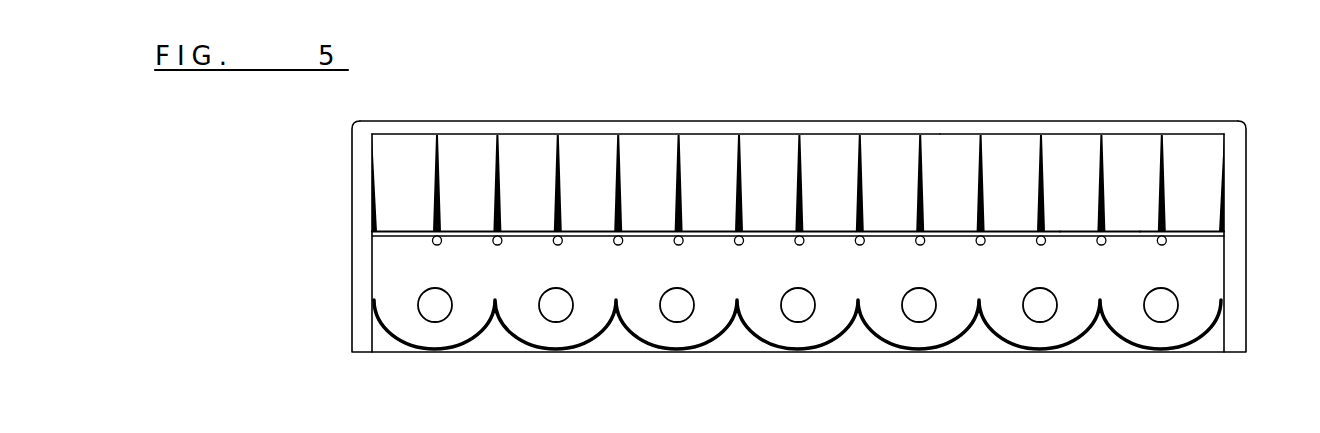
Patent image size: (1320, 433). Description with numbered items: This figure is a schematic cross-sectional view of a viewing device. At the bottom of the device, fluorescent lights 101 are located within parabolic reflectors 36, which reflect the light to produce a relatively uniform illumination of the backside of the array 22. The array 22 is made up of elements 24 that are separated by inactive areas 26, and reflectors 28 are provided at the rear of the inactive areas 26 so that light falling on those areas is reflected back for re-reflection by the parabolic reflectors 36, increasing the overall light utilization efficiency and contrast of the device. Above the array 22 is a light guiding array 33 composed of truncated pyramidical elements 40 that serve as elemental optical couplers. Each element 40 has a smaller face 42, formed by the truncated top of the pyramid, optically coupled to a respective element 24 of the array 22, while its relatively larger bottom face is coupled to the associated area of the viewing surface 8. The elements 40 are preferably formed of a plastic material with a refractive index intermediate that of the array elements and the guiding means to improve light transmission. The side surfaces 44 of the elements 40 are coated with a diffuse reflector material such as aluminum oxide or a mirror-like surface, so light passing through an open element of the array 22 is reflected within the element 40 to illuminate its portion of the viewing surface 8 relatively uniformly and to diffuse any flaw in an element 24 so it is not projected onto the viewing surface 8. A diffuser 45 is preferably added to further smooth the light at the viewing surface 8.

The viewing surface 8 is at (920, 128).
The array 22 is at (1250, 232).
The elements of array 24 is at (1073, 237).
The inactive areas 26 is at (432, 222).
The reflectors 28 is at (432, 247).
The light guiding array 33 is at (336, 154).
The parabolic reflectors 36 is at (376, 316).
The truncated pyramidical elements 40 is at (965, 140).
The smaller face 42 is at (1072, 230).
The side surfaces 44 is at (800, 160).
The diffuser 45 is at (646, 129).
The fluorescent lights 101 is at (542, 298).